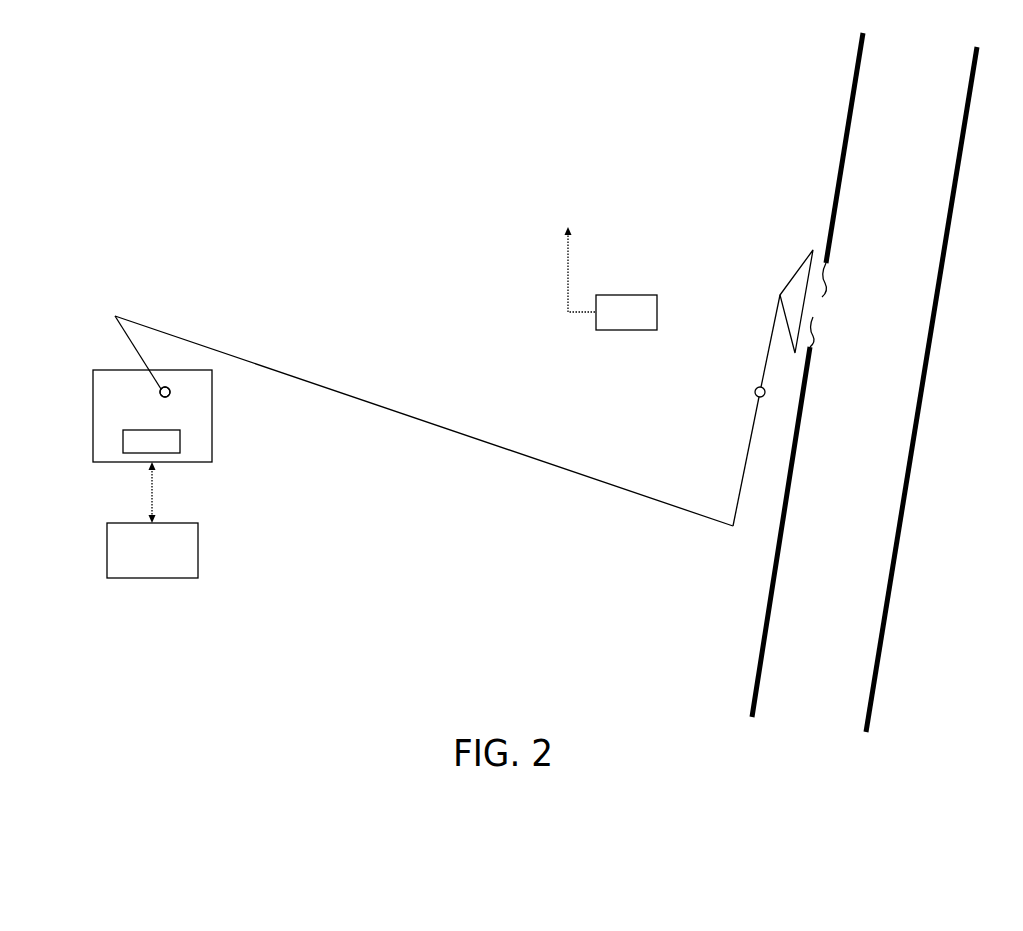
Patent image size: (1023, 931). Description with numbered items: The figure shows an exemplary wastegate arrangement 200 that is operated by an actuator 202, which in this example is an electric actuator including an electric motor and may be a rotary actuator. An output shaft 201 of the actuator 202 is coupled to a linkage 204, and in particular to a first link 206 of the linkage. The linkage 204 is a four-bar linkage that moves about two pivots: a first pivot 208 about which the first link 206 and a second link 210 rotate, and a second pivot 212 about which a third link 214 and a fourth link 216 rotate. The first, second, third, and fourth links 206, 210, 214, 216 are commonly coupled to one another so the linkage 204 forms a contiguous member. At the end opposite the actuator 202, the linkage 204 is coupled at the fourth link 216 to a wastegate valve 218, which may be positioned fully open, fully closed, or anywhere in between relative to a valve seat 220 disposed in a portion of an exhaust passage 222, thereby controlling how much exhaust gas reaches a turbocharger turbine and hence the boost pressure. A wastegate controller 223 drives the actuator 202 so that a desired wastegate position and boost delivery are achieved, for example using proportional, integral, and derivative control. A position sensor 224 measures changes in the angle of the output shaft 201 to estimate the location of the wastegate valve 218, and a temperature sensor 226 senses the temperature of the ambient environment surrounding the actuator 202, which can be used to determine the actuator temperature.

The wastegate arrangement 200 is at (445, 213).
The output shaft 201 is at (160, 393).
The actuator 202 is at (93, 370).
The linkage 204 is at (403, 466).
The first link 206 is at (115, 316).
The first pivot 208 is at (168, 397).
The second link 210 is at (243, 360).
The second pivot 212 is at (765, 393).
The third link 214 is at (742, 482).
The fourth link 216 is at (765, 367).
The wastegate valve 218 is at (795, 273).
The valve seat 220 is at (807, 375).
The exhaust passage 222 is at (858, 585).
The wastegate controller 223 is at (152, 520).
The position sensor 224 is at (151, 441).
The temperature sensor 226 is at (611, 272).